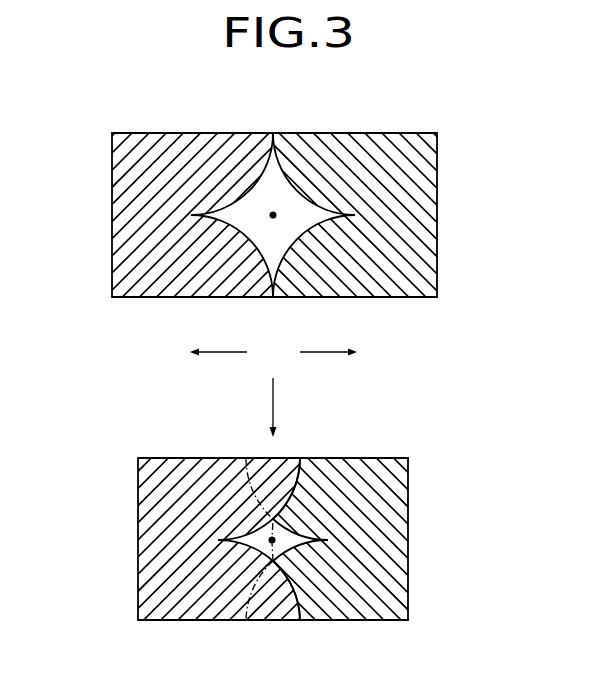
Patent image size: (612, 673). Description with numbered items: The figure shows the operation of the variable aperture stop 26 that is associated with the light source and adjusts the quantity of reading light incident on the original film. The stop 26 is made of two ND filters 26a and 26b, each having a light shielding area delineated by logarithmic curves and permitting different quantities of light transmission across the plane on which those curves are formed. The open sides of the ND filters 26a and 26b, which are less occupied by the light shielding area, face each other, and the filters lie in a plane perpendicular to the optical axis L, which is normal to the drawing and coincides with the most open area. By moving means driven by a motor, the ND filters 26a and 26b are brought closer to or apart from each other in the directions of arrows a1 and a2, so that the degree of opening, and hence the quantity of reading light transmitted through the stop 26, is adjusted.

The stop 26 is at (291, 376).
The ND filter 26a is at (428, 188).
The ND filter 26b is at (118, 232).
The optical axis L is at (273, 215).
The arrow a1 is at (320, 352).
The arrow a2 is at (215, 353).